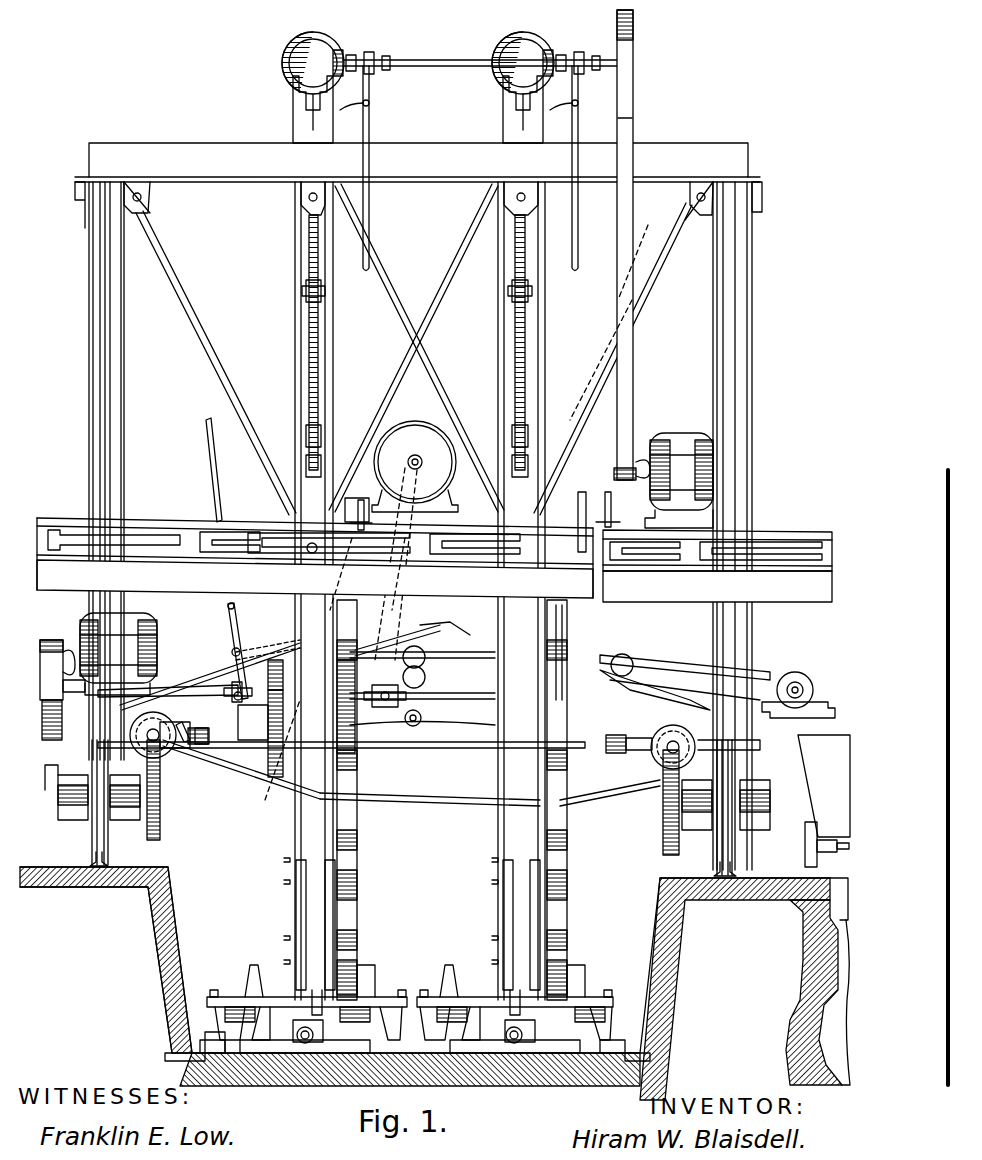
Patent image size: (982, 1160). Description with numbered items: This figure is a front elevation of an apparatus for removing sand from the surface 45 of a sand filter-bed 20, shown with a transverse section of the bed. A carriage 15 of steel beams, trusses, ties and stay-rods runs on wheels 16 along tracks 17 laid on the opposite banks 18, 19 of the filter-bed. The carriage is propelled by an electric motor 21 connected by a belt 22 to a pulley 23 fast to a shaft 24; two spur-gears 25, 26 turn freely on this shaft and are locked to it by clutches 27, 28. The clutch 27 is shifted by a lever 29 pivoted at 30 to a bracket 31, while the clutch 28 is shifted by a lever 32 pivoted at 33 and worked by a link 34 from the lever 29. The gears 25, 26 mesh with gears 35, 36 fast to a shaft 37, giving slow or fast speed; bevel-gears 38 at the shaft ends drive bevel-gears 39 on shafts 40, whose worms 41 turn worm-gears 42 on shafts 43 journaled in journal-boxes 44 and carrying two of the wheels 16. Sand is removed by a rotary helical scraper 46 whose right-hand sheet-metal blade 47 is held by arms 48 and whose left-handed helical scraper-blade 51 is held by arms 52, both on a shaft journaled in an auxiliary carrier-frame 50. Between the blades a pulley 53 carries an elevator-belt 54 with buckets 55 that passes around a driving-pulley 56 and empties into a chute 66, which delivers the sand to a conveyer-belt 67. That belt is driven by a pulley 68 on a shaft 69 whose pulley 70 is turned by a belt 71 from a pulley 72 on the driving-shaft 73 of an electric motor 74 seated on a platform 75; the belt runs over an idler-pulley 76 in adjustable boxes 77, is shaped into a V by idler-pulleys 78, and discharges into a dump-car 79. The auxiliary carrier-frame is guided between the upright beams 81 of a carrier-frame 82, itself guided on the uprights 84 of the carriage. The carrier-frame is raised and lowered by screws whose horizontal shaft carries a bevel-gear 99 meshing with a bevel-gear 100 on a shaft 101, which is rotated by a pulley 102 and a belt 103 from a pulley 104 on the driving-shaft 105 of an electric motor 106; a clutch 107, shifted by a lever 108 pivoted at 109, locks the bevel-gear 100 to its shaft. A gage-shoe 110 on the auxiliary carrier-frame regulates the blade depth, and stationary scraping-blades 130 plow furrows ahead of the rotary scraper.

The carriage 15 is at (220, 183).
The wheels 16 is at (108, 835).
The tracks 17 is at (94, 858).
The bank 18 is at (745, 989).
The bank 19 is at (84, 972).
The filter-bed 20 is at (425, 976).
The electric motor 21 is at (148, 640).
The belt 22 is at (48, 672).
The pulley 23 is at (50, 740).
The shaft 24 is at (163, 688).
The spur-gear 25 is at (252, 722).
The spur-gear 26 is at (385, 703).
The clutch 27 is at (236, 700).
The clutch 28 is at (422, 707).
The lever 29 is at (213, 478).
The pivot 30 is at (232, 652).
The bracket 31 is at (246, 650).
The lever 32 is at (380, 642).
The pivot 33 is at (445, 633).
The link 34 is at (233, 620).
The gear 35 is at (268, 768).
The gear 36 is at (355, 748).
The shaft 37 is at (236, 736).
The bevel-gears 38 is at (648, 752).
The bevel-gears 39 is at (170, 745).
The shafts 40 is at (156, 732).
The worms 41 is at (160, 760).
The worm-gears 42 is at (160, 828).
The shafts 43 is at (58, 800).
The journal-boxes 44 is at (112, 818).
The surface 45 is at (205, 1035).
The rotary helical scraper 46 is at (410, 992).
The sheet-metal blade 47 is at (253, 965).
The arms 48 is at (272, 1005).
The auxiliary carrier-frame 50 is at (325, 990).
The left-handed helical scraper-blade 51 is at (376, 980).
The arms 52 is at (318, 1060).
The pulley 53 is at (357, 975).
The elevator-belt 54 is at (357, 876).
The buckets 55 is at (357, 840).
The driving-pulley 56 is at (366, 512).
The chute 66 is at (347, 498).
The conveyer-belt 67 is at (466, 660).
The pulley 68 is at (272, 675).
The shaft 69 is at (264, 803).
The pulley 70 is at (232, 662).
The belt 71 is at (337, 575).
The pulley 72 is at (396, 564).
The driving-shaft 73 is at (415, 455).
The electric motor 74 is at (435, 448).
The platform 75 is at (55, 520).
The idler-pulley 76 is at (806, 680).
The boxes 77 is at (812, 698).
The idler-pulleys 78 is at (426, 663).
The dump-car 79 is at (824, 801).
The upright beams 81 is at (296, 910).
The carrier-frame 82 is at (284, 866).
The uprights 84 is at (308, 320).
The bevel-gear 99 is at (322, 38).
The bevel-gear 100 is at (344, 56).
The shaft 101 is at (447, 67).
The pulley 102 is at (633, 42).
The belt 103 is at (633, 134).
The pulley 104 is at (636, 474).
The driving-shaft 105 is at (614, 470).
The electric motor 106 is at (680, 433).
The clutch 107 is at (378, 56).
The lever 108 is at (369, 126).
The pivot 109 is at (369, 105).
The gage-shoe 110 is at (285, 1053).
The stationary scraping-blades 130 is at (168, 1053).